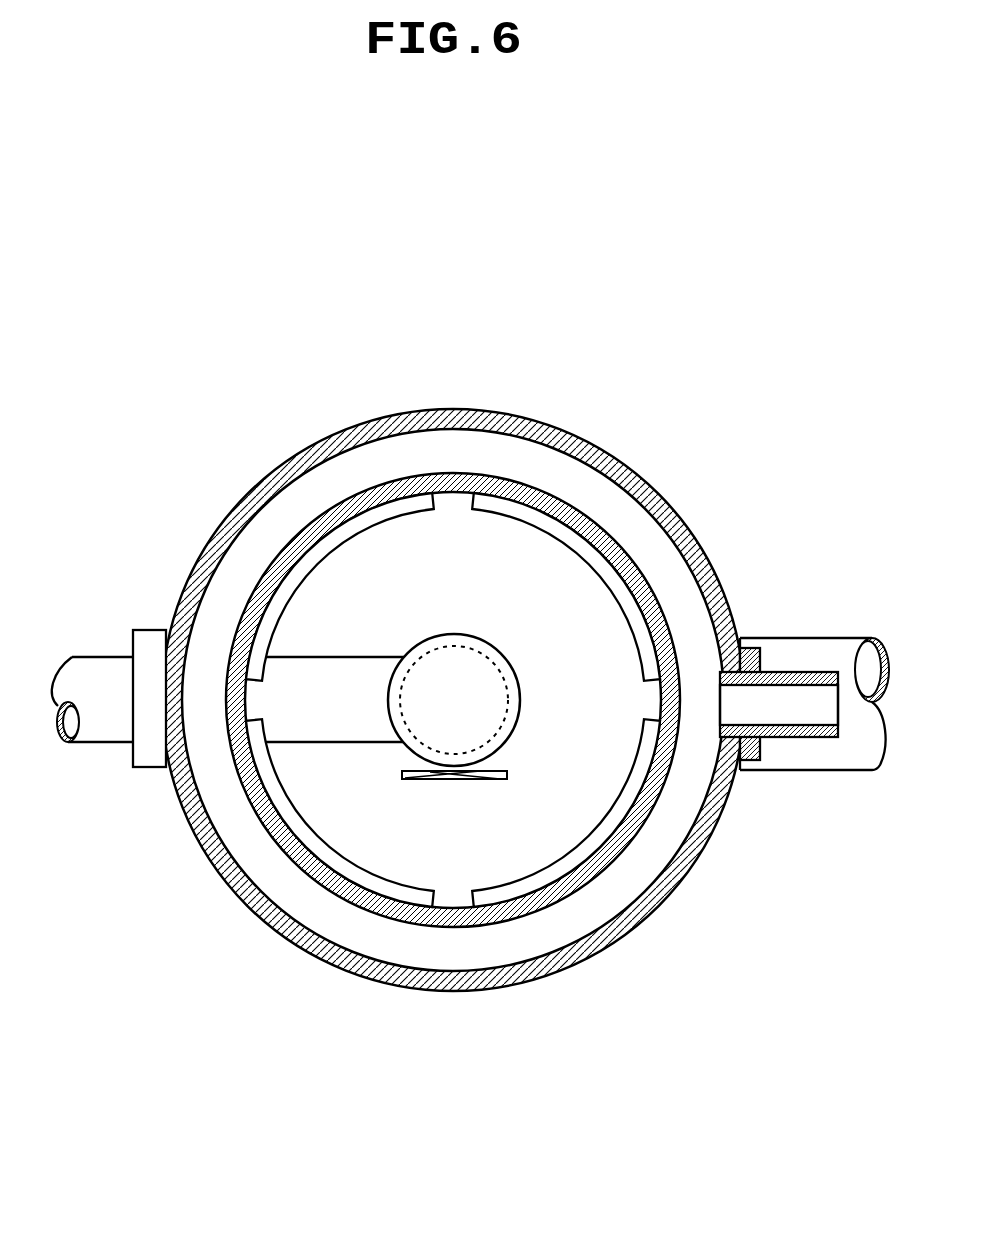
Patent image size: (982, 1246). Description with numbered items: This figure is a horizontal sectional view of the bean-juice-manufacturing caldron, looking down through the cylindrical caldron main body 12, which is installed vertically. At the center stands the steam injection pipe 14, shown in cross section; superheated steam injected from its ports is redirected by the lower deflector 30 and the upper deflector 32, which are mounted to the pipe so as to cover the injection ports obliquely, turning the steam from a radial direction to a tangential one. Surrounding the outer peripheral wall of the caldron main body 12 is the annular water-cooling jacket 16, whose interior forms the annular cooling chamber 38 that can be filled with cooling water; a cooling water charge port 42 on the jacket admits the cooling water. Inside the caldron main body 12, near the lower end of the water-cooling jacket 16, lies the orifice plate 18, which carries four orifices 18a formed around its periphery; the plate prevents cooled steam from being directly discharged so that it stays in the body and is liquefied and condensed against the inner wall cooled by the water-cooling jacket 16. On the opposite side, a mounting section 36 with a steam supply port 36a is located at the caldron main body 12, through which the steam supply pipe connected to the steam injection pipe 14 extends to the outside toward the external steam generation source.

The caldron main body 12 is at (462, 693).
The steam injection pipe 14 is at (470, 700).
The water-cooling jacket 16 is at (288, 455).
The orifice plate 18 is at (487, 553).
The orifices 18a is at (297, 578).
The lower deflector 30 is at (503, 780).
The upper deflector 32 is at (407, 780).
The mounting section 36 is at (147, 750).
The steam supply port 36a is at (123, 702).
The annular cooling chamber 38 is at (378, 470).
The cooling water charge port 42 is at (753, 708).